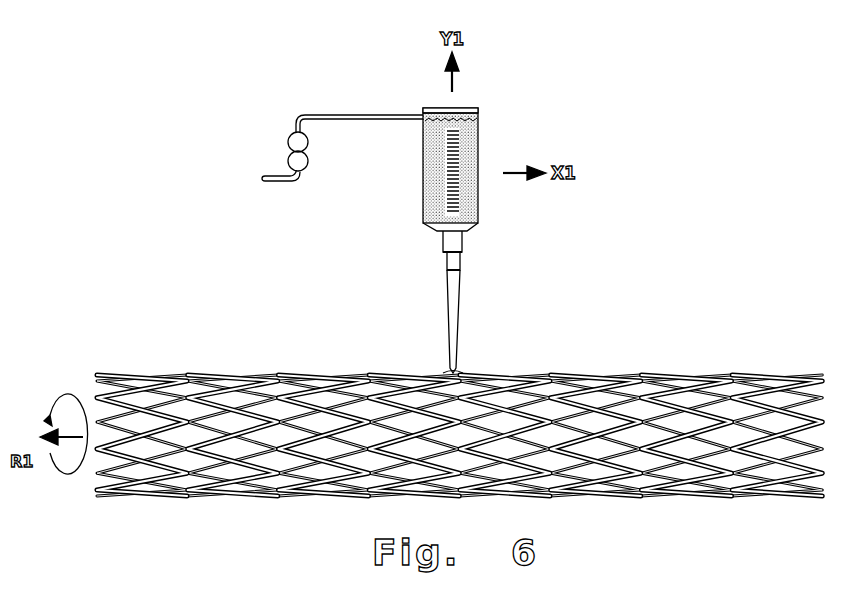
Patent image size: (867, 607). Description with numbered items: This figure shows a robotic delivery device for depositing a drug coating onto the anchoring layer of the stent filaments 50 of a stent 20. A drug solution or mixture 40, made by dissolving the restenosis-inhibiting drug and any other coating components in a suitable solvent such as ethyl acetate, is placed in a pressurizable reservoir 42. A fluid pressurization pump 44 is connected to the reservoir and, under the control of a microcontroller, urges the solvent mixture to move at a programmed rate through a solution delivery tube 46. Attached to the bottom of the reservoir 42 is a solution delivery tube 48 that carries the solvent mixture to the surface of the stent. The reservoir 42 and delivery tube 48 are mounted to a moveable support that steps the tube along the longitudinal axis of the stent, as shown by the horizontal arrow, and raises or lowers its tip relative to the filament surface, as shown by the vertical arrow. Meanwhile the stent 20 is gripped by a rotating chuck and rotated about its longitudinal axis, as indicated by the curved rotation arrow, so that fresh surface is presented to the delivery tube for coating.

The stent 20 is at (608, 368).
The drug solution or mixture 40 is at (478, 136).
The pressurizable reservoir 42 is at (423, 197).
The fluid pressurization pump 44 is at (288, 142).
The solution delivery tube 46 is at (371, 117).
The solution delivery tube 48 is at (458, 325).
The stent filaments 50 is at (480, 372).